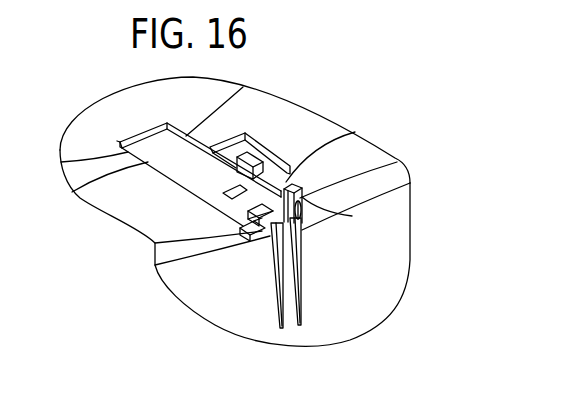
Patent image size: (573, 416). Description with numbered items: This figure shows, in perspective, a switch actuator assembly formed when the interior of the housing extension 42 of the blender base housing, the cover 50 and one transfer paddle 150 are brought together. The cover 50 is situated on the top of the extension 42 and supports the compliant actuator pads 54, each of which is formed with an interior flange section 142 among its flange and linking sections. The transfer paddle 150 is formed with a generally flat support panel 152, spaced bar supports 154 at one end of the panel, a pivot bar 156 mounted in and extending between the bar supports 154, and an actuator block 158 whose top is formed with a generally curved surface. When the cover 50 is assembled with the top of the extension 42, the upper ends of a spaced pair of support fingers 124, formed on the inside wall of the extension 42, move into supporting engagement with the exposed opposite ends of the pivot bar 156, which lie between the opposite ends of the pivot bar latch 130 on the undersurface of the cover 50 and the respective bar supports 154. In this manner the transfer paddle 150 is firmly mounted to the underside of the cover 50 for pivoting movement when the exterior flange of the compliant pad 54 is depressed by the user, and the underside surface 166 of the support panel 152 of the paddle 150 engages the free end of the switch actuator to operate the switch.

The housing extension 42 is at (410, 252).
The cover 50 is at (300, 103).
The compliant actuator pad 54 is at (272, 147).
The support fingers 124 is at (303, 220).
The pivot bar latch 130 is at (300, 192).
The interior flange section 142 is at (354, 132).
The transfer paddle 150 is at (141, 132).
The support panel 152 is at (121, 141).
The bar supports 154 is at (243, 222).
The pivot bar 156 is at (351, 216).
The actuator block 158 is at (249, 167).
The underside surface 166 is at (73, 193).